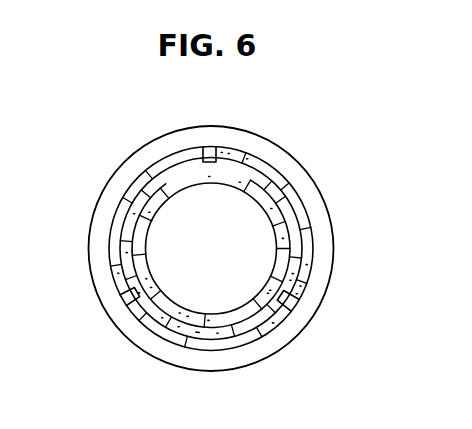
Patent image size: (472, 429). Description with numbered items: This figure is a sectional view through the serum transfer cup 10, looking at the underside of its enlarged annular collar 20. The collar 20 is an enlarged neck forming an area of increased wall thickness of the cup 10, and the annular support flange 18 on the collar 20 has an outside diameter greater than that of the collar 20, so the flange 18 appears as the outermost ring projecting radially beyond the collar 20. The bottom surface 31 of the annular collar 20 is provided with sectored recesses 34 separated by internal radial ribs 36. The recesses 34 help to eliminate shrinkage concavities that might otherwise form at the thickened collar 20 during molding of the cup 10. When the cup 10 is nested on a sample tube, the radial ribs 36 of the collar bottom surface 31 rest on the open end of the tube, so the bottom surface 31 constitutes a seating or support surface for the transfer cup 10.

The serum transfer cup 10 is at (373, 160).
The annular support flange 18 is at (97, 213).
The enlarged annular collar 20 is at (273, 168).
The bottom surface 31 is at (311, 226).
The sectored recesses 34 is at (143, 175).
The internal radial ribs 36 is at (228, 176).